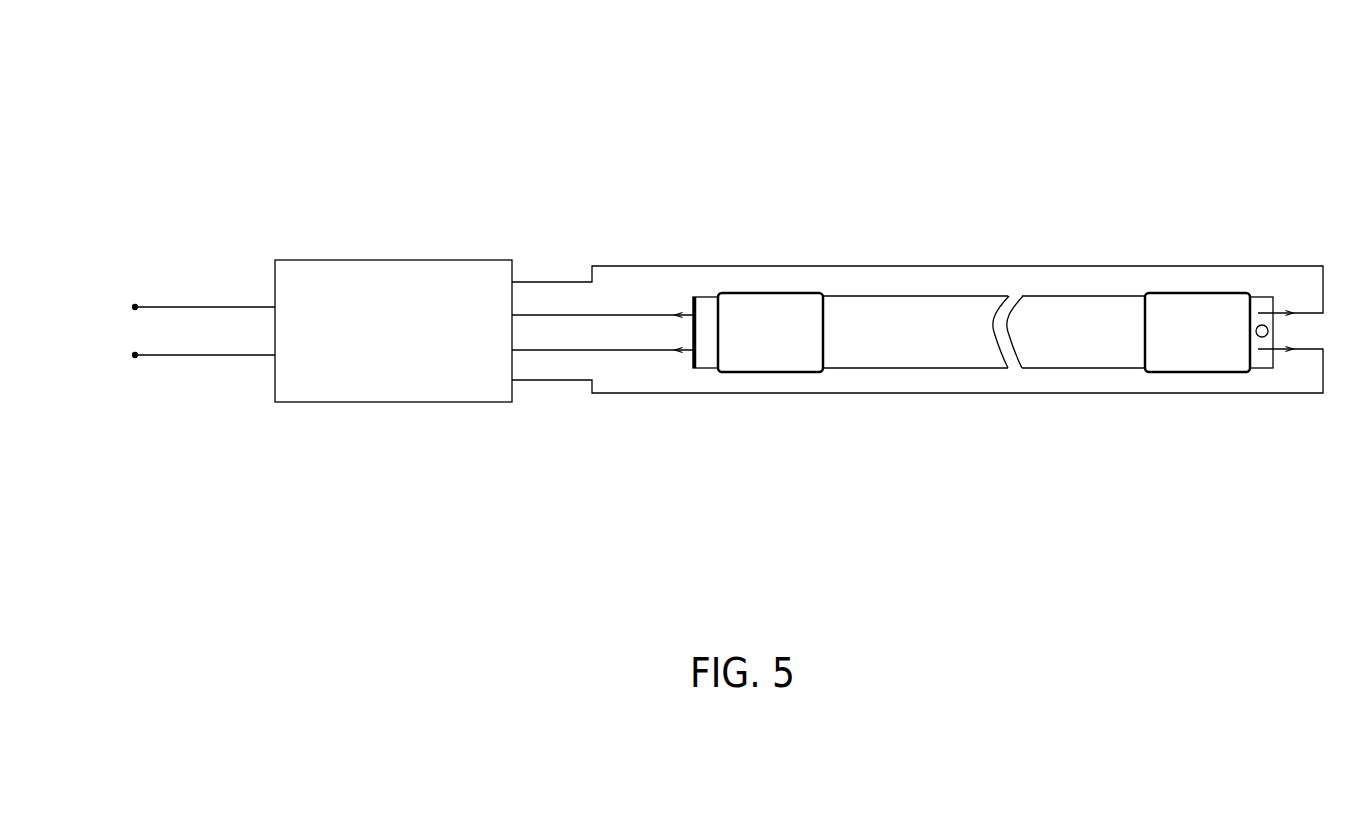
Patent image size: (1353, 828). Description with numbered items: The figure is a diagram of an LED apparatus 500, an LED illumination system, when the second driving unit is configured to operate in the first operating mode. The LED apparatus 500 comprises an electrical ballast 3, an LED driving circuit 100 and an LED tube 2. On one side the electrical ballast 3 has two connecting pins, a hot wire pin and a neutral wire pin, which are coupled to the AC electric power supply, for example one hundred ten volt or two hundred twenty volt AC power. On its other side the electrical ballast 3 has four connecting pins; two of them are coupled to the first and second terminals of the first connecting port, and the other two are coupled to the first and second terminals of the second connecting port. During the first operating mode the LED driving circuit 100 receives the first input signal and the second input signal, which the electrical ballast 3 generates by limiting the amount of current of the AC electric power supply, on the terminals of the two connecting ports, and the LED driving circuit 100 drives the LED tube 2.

The LED apparatus 500 is at (151, 123).
The electrical ballast 3 is at (432, 268).
The LED tube 2 is at (919, 308).
The LED driving circuit 100 is at (1183, 362).